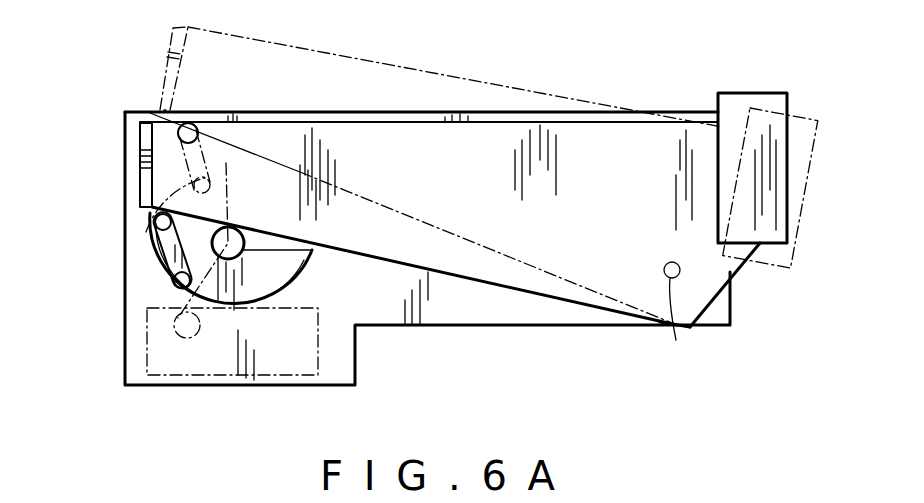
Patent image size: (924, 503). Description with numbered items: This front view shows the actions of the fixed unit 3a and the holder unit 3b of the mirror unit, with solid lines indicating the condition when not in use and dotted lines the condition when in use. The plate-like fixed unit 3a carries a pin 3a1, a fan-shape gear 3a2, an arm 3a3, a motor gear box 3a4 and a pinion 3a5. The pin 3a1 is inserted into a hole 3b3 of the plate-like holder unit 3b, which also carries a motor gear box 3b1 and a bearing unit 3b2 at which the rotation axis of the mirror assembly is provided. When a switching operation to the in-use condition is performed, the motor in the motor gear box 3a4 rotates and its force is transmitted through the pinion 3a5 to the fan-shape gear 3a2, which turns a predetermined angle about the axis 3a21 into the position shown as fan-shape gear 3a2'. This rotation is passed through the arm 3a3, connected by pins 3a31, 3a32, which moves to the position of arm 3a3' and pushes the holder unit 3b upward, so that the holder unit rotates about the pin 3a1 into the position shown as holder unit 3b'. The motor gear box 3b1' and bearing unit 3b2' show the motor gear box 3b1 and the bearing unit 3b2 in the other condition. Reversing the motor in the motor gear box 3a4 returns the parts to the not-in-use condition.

The fixed unit 3a is at (733, 328).
The pin 3a1 is at (684, 330).
The fan-shape gear 3a2 is at (294, 312).
The fan-shape gear in condition when in use 3a2' is at (127, 240).
The axis 3a21 is at (250, 262).
The arm 3a3 is at (103, 250).
The arm in condition when in use 3a3' is at (132, 133).
The pin 3a31 is at (154, 223).
The pin 3a32 is at (170, 288).
The motor gear box 3a4 is at (300, 370).
The pinion 3a5 is at (205, 353).
The holder unit 3b is at (474, 223).
The holder unit in condition when in use 3b' is at (455, 73).
The motor gear box 3b1 is at (733, 134).
The motor gear box in other condition 3b1' is at (795, 153).
The bearing unit 3b2 is at (88, 165).
The bearing unit in other condition 3b2' is at (141, 68).
The hole 3b3 is at (670, 262).